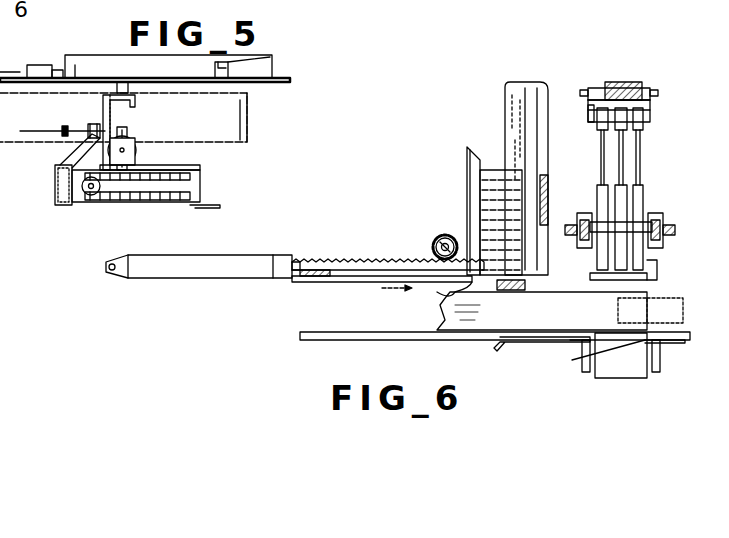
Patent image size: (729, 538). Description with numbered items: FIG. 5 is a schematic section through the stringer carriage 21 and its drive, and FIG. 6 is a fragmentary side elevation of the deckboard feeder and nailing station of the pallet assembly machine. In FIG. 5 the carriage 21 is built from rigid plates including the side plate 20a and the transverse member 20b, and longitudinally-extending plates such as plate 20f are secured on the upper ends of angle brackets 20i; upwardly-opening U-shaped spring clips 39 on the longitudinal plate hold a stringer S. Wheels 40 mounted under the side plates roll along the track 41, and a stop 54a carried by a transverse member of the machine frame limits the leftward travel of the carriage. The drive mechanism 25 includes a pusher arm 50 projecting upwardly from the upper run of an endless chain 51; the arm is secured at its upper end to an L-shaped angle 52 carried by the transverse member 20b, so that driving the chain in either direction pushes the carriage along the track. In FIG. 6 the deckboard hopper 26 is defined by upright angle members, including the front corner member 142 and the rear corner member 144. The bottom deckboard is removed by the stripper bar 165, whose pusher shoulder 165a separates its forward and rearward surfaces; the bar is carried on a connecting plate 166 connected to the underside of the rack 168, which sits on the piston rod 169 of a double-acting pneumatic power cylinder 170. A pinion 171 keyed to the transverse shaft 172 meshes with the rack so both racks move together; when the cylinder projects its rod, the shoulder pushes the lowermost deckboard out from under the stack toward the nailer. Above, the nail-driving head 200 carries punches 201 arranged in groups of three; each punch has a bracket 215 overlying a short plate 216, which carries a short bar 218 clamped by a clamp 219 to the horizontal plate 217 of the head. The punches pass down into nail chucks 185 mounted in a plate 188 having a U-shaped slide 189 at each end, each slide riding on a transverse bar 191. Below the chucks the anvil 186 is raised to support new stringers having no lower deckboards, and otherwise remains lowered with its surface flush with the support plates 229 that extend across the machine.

In FIG. 5, the slab / stone S is at (110, 60).
In FIG. 6, the slab / stone S is at (430, 327).
In FIG. 5, the longitudinally-extending plate 20f is at (290, 81).
In FIG. 5, the U-shaped spring clip 39 is at (70, 63).
In FIG. 5, the stringer carriage 21 is at (247, 105).
In FIG. 6, the stringer carriage 21 is at (634, 40).
In FIG. 5, the side plate 20a is at (243, 126).
In FIG. 5, the angle bracket 20i is at (116, 86).
In FIG. 5, the transverse member 20b is at (104, 104).
In FIG. 5, the pusher arm 50 is at (122, 127).
In FIG. 5, the wheel 40 is at (132, 145).
In FIG. 5, the stop 54a is at (52, 133).
In FIG. 5, the L-shaped angle 52 is at (100, 152).
In FIG. 5, the track 41 is at (200, 166).
In FIG. 5, the drive mechanism 25 is at (196, 189).
In FIG. 5, the endless chain 51 is at (223, 202).
In FIG. 6, the double-acting pneumatic power cylinder 170 is at (205, 276).
In FIG. 6, the rack 168 is at (349, 266).
In FIG. 6, the piston rod 169 is at (300, 258).
In FIG. 6, the connecting plate 166 is at (318, 262).
In FIG. 6, the stripper bar 165 is at (320, 280).
In FIG. 6, the pusher shoulder 165a is at (452, 293).
In FIG. 6, the transverse shaft 172 is at (442, 242).
In FIG. 6, the pinion 171 is at (413, 219).
In FIG. 6, the deckboard hopper 26 is at (470, 136).
In FIG. 6, the upright angle member 144 is at (506, 82).
In FIG. 6, the upright angle member 142 is at (476, 176).
In FIG. 6, the nail-driving head 200 is at (622, 88).
In FIG. 6, the horizontal plate 217 is at (612, 84).
In FIG. 6, the clamp 219 is at (590, 90).
In FIG. 6, the short bar 218 is at (654, 101).
In FIG. 6, the bracket 215 is at (648, 121).
In FIG. 6, the short plate 216 is at (592, 116).
In FIG. 6, the punch 201 is at (606, 154).
In FIG. 6, the nail chuck 185 is at (612, 186).
In FIG. 6, the plate 188 is at (640, 214).
In FIG. 6, the U-shaped slide 189 is at (592, 214).
In FIG. 6, the transverse bar 191 is at (575, 228).
In FIG. 6, the support plate 229 is at (573, 348).
In FIG. 6, the anvil 186 is at (625, 380).